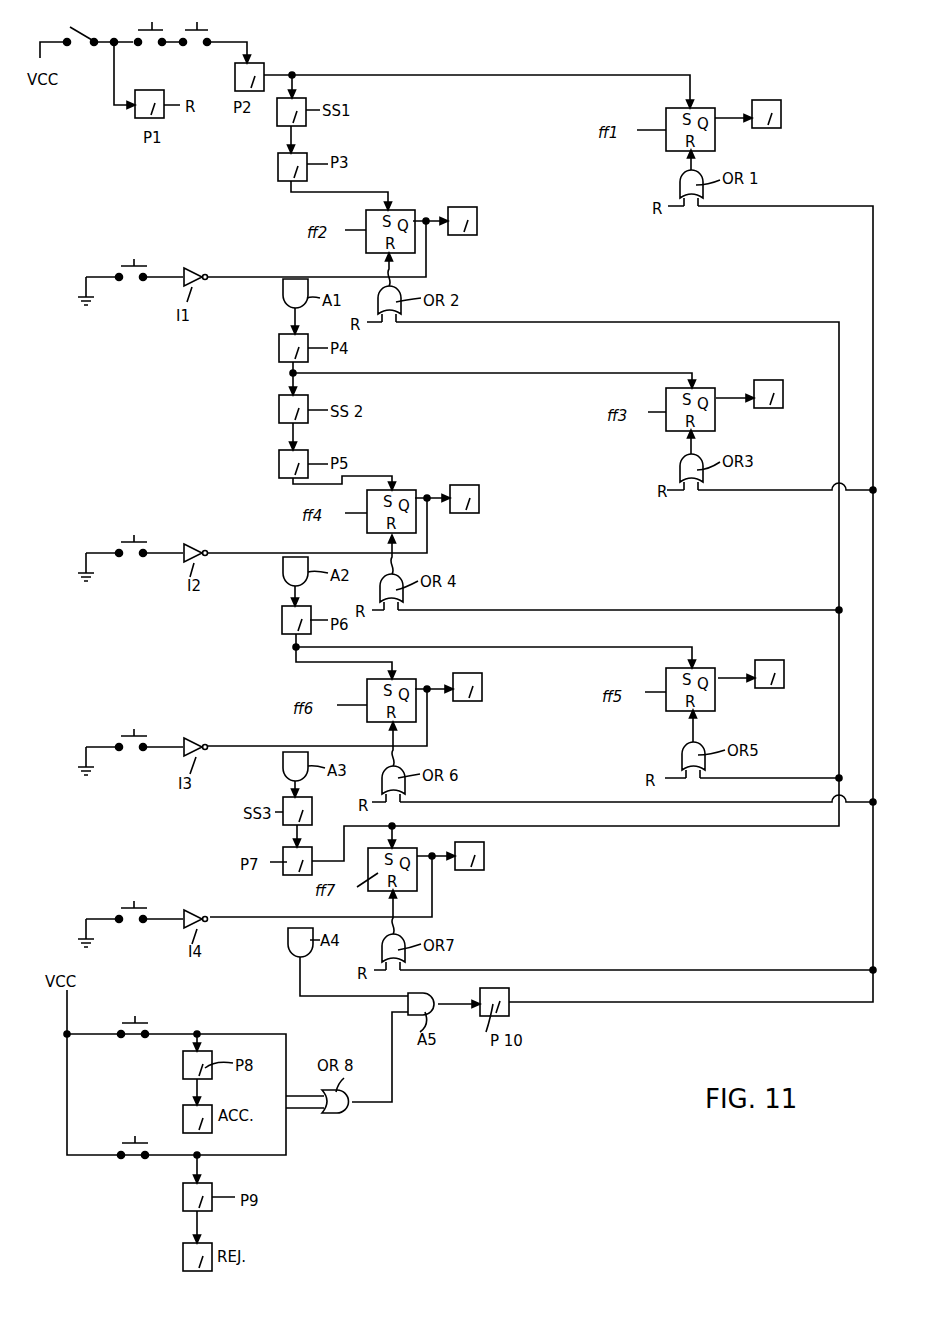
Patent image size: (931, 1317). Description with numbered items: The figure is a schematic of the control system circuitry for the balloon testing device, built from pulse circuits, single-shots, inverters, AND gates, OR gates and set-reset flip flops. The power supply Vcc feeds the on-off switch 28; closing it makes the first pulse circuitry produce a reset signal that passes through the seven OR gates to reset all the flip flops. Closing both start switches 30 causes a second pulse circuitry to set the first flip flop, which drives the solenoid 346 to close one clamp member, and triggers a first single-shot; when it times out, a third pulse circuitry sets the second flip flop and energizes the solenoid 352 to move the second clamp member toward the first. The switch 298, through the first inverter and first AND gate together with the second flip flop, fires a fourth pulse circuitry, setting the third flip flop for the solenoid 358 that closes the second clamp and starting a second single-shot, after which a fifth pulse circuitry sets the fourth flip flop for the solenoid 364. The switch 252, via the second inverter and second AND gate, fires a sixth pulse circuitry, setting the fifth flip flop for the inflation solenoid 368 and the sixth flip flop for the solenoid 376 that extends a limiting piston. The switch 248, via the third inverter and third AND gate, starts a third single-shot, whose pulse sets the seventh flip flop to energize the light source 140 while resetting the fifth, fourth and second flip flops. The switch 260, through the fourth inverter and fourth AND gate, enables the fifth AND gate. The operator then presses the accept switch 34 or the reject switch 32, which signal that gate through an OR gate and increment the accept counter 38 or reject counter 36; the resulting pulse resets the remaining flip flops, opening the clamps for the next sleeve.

The on-off switch 28 is at (83, 46).
The start switches 30 is at (202, 58).
The switch 298 is at (134, 259).
The switch 252 is at (134, 535).
The switch 248 is at (134, 729).
The switch 260 is at (134, 901).
The accept switch 34 is at (136, 1016).
The reject switch 32 is at (134, 1134).
The accept counter 38 is at (190, 1122).
The reject counter 36 is at (190, 1260).
The solenoid 346 is at (780, 114).
The solenoid 352 is at (476, 221).
The solenoid 358 is at (782, 394).
The solenoid 364 is at (478, 499).
The solenoid 368 is at (783, 674).
The solenoid 376 is at (481, 687).
The light source 140 is at (483, 856).